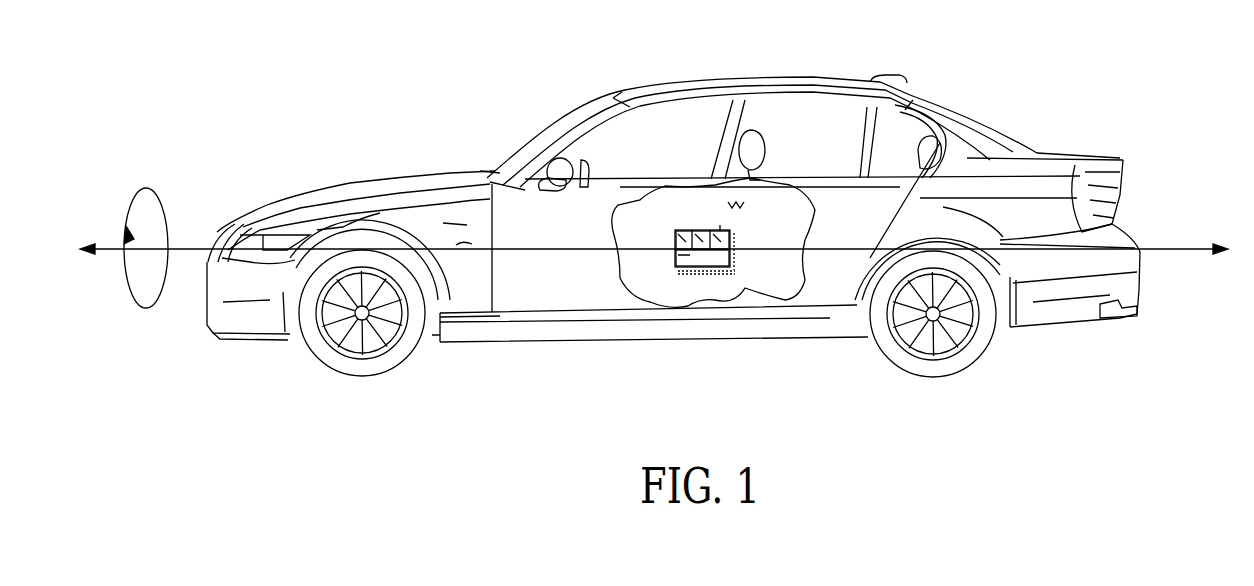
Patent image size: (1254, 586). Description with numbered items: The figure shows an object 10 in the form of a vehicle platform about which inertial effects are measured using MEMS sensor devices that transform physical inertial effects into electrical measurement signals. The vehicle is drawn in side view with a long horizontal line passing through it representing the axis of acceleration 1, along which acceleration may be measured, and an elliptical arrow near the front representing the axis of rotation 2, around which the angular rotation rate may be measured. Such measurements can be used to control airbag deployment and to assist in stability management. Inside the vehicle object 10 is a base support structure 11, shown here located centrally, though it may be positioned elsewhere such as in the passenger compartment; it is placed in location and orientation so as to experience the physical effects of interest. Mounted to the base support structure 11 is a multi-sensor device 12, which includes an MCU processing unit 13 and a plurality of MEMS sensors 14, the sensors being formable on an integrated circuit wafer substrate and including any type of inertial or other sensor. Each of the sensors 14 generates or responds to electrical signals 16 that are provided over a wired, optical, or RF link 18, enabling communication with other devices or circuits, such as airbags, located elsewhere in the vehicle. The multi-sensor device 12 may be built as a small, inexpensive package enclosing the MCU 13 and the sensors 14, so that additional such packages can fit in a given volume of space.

The axis of acceleration 1 is at (1177, 247).
The axis of rotation 2 is at (148, 188).
The object 10 is at (673, 211).
The base support structure 11 is at (713, 242).
The multi-sensor device 12 is at (758, 273).
The MCU processing unit 13 is at (676, 261).
The MEMS sensors 14 is at (676, 233).
The electrical signals 16 is at (720, 225).
The link 18 is at (744, 202).